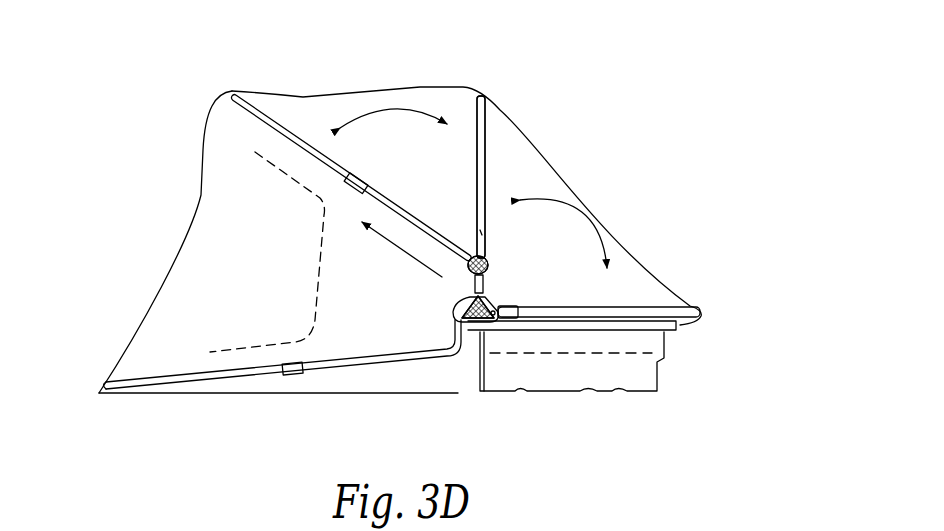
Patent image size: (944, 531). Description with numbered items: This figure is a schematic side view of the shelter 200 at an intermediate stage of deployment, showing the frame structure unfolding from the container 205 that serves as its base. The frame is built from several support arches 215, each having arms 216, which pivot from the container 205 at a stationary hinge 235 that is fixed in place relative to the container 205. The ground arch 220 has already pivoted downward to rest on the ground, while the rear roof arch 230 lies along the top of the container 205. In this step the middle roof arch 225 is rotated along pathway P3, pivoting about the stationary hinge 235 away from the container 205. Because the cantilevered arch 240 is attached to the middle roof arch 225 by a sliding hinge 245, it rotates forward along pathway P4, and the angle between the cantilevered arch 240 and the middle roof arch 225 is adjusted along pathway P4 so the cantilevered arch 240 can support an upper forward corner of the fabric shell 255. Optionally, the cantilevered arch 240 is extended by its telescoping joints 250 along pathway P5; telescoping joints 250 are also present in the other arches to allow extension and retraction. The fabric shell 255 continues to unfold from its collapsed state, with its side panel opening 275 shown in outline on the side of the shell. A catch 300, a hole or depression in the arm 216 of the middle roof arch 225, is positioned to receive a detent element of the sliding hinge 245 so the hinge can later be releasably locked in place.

The shelter 200 is at (677, 137).
The container 205 is at (603, 370).
The support arches 215 is at (462, 235).
The arms 216 is at (477, 163).
The ground arch 220 is at (200, 377).
The middle roof arch 225 is at (484, 127).
The rear roof arch 230 is at (680, 310).
The stationary hinge 235 is at (483, 315).
The cantilevered arch 240 is at (237, 90).
The sliding hinge 245 is at (490, 262).
The telescoping joint 250 is at (357, 184).
The fabric shell 255 is at (303, 97).
The side panel opening 275 is at (318, 298).
The catch 300 is at (482, 235).
The pathway P3 is at (585, 213).
The pathway P4 is at (468, 80).
The pathway P5 is at (410, 253).